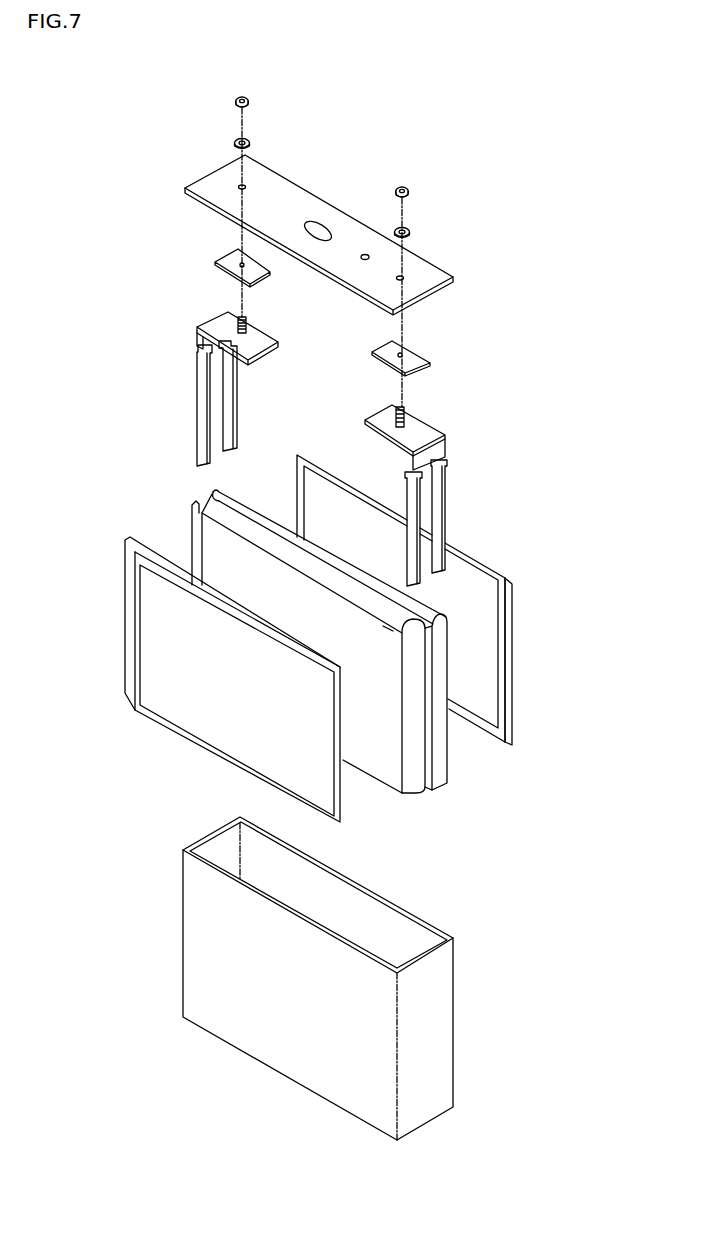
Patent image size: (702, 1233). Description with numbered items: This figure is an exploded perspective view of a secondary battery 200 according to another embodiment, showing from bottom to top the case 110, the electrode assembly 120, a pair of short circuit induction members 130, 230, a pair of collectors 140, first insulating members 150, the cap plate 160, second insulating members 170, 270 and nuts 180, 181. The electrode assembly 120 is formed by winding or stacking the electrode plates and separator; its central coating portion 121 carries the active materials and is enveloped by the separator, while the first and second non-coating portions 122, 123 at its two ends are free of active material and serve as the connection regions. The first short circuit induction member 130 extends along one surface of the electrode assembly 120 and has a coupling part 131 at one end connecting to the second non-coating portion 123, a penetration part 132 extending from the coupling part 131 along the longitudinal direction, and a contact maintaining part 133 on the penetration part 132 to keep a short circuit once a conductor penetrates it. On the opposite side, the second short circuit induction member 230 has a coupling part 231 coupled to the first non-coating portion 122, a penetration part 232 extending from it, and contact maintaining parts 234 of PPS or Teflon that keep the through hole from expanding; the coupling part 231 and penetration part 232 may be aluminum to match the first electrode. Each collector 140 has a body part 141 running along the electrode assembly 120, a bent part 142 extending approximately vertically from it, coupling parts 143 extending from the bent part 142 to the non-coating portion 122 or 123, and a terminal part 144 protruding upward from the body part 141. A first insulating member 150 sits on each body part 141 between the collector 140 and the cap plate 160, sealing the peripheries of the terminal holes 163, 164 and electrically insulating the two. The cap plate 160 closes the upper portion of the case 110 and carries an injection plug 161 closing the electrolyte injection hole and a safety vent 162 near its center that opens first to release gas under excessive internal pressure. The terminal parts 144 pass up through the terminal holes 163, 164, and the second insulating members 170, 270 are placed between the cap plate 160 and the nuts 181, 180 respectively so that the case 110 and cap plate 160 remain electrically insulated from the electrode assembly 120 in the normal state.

The secondary battery 200 is at (97, 96).
The case 110 is at (447, 1035).
The electrode assembly 120 is at (459, 762).
The coating portion 121 is at (382, 772).
The first non-coating portion 122 is at (413, 792).
The second non-coating portion 123 is at (190, 522).
The first short circuit induction member 130 is at (116, 560).
The coupling part 131 is at (127, 615).
The penetration part 132 is at (148, 725).
The contact maintaining part 133 is at (213, 735).
The collector 140 is at (182, 368).
The body part 141 is at (213, 317).
The bent part 142 is at (196, 333).
The coupling part 143 is at (197, 397).
The terminal part 144 is at (250, 316).
The first insulating member 150 is at (223, 254).
The cap plate 160 is at (440, 272).
The injection plug 161 is at (366, 253).
The safety vent 162 is at (318, 226).
The terminal hole 163 is at (248, 186).
The terminal hole 164 is at (404, 275).
The second insulating member 170 is at (235, 142).
The nut 180 is at (403, 188).
The nut 181 is at (236, 100).
The second short circuit induction member 230 is at (524, 657).
The coupling part 231 is at (510, 586).
The penetration part 232 is at (327, 470).
The contact maintaining part 234 is at (348, 498).
The second insulating member 270 is at (404, 231).